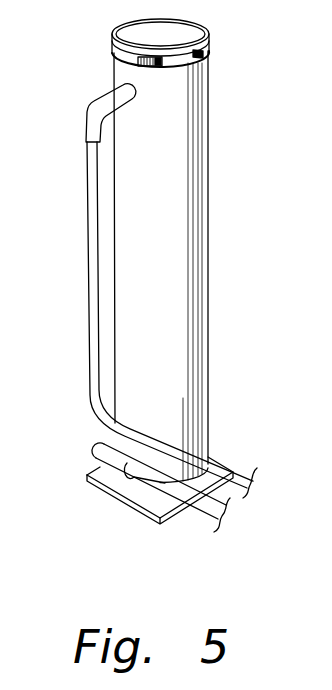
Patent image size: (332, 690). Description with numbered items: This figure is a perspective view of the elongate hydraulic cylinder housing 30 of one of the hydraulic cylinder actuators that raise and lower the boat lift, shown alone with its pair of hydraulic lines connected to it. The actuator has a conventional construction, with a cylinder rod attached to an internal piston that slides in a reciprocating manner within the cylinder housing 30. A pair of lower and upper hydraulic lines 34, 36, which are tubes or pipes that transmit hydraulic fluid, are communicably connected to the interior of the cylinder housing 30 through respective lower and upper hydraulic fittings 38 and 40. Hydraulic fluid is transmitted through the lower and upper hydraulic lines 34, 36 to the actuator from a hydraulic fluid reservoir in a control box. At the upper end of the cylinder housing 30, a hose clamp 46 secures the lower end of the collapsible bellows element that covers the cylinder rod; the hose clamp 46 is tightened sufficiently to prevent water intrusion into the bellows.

The hydraulic cylinder housing 30 is at (208, 217).
The lower hydraulic line 34 is at (147, 508).
The upper hydraulic line 36 is at (85, 180).
The lower hydraulic fitting 38 is at (90, 457).
The upper hydraulic fitting 40 is at (110, 92).
The hose clamp 46 is at (208, 52).